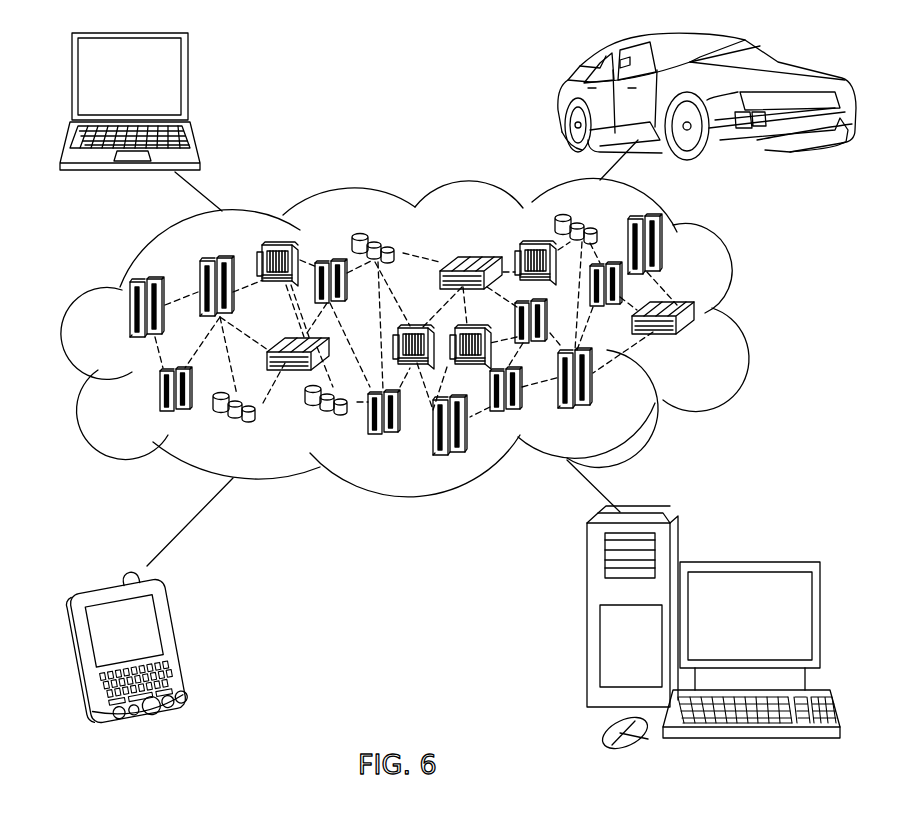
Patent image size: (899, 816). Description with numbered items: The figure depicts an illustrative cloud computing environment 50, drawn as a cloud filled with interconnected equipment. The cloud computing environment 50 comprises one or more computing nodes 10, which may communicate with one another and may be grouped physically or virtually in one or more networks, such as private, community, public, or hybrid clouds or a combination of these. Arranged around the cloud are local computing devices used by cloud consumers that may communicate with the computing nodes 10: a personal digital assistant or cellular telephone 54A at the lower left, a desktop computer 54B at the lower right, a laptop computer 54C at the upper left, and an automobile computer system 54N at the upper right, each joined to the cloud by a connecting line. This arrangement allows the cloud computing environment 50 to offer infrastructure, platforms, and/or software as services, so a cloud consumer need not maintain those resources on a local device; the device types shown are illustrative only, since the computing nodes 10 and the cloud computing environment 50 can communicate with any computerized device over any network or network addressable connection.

The computing nodes 10 is at (702, 343).
The cloud computing environment 50 is at (748, 315).
The personal digital assistant or cellular telephone 54A is at (187, 641).
The desktop computer 54B is at (747, 561).
The laptop computer 54C is at (188, 84).
The automobile computer system 54N is at (562, 97).